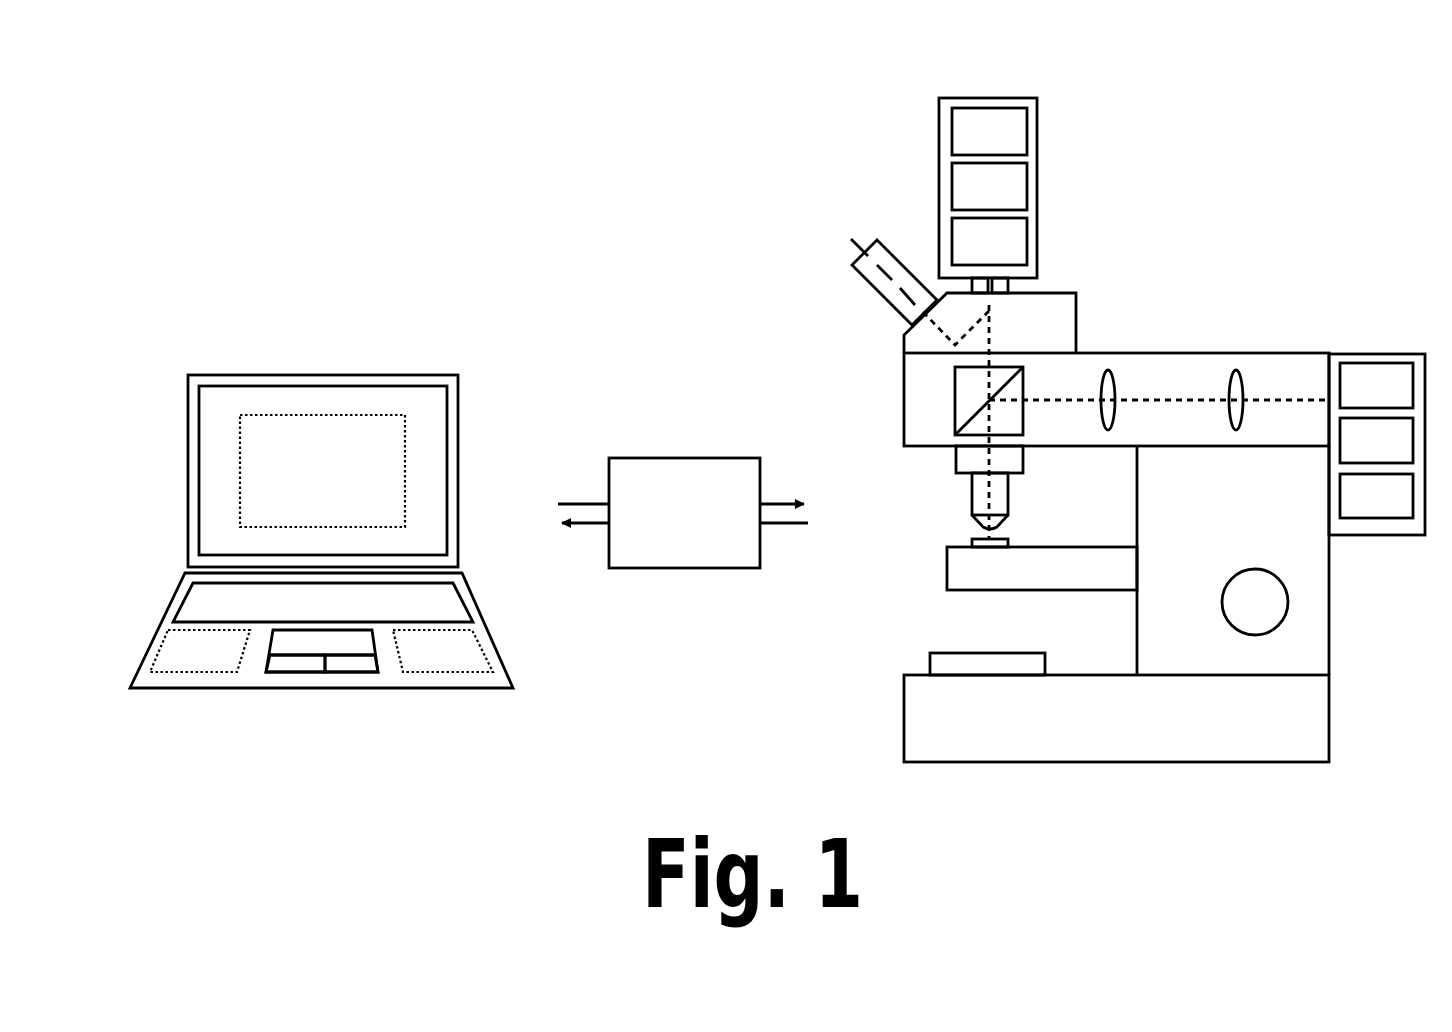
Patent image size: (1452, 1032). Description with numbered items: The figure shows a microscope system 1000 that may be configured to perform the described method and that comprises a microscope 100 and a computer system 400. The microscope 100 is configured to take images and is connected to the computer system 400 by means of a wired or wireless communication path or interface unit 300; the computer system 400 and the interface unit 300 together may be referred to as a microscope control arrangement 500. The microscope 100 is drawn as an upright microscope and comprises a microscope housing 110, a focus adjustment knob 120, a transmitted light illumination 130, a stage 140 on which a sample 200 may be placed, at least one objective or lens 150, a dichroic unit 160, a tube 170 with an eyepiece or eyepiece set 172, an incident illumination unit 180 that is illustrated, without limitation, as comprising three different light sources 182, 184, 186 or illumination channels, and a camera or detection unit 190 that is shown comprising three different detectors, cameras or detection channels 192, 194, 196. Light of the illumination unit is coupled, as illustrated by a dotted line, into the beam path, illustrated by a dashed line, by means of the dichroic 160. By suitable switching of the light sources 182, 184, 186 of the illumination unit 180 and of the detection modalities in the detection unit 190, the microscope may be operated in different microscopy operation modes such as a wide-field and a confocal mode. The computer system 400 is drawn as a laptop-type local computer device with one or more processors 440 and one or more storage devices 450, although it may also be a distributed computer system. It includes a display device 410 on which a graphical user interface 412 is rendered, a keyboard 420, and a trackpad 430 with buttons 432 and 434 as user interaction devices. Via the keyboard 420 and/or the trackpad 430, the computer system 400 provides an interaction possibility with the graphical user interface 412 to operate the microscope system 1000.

The microscope system 1000 is at (724, 126).
The microscope 100 is at (1127, 303).
The microscope housing 110 is at (1331, 608).
The focus adjustment knob 120 is at (1238, 569).
The transmitted light illumination 130 is at (930, 654).
The stage 140 is at (1038, 547).
The objective or lens 150 is at (972, 516).
The dichroic unit 160 is at (955, 405).
The tube 170 is at (1048, 293).
The eyepiece or eyepiece set 172 is at (852, 262).
The incident illumination unit 180 is at (1378, 354).
The light source 182 is at (1376, 385).
The light source 184 is at (1376, 440).
The light source 186 is at (1376, 496).
The camera or detection unit 190 is at (975, 97).
The detector or detection channel 192 is at (989, 131).
The detector or detection channel 194 is at (989, 186).
The detector or detection channel 196 is at (989, 241).
The sample 200 is at (976, 555).
The interface unit 300 is at (684, 513).
The computer system 400 is at (326, 355).
The display device 410 is at (173, 389).
The graphical user interface 412 is at (322, 471).
The keyboard 420 is at (203, 597).
The trackpad 430 is at (384, 657).
The button 432 is at (298, 674).
The button 434 is at (347, 674).
The processor 440 is at (177, 655).
The storage device 450 is at (468, 655).
The microscope control arrangement 500 is at (548, 328).